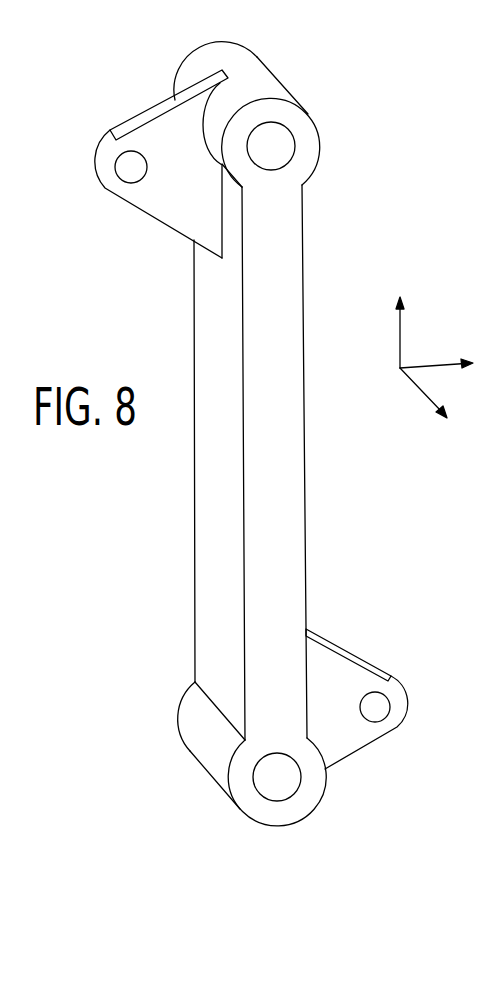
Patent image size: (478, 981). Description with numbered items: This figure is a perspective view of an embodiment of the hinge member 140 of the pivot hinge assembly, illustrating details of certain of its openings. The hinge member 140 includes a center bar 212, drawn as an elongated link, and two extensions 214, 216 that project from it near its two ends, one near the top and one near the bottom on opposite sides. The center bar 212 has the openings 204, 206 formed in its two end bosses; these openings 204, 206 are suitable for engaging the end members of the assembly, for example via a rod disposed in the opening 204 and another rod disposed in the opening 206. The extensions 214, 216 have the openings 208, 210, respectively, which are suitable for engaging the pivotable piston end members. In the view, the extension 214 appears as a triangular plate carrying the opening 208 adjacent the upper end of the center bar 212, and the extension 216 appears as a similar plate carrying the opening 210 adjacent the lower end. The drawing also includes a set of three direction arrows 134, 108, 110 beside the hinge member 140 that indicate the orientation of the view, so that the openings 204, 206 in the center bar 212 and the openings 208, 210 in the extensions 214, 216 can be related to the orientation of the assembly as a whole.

The hinge member 140 is at (373, 233).
The center bar 212 is at (291, 368).
The opening 206 is at (289, 136).
The opening 204 is at (286, 789).
The extension 214 is at (200, 194).
The extension 216 is at (351, 694).
The opening 208 is at (118, 163).
The opening 210 is at (388, 708).
The vertical axis 134 is at (398, 334).
The lateral axis 108 is at (437, 362).
The longitudinal axis 110 is at (418, 390).